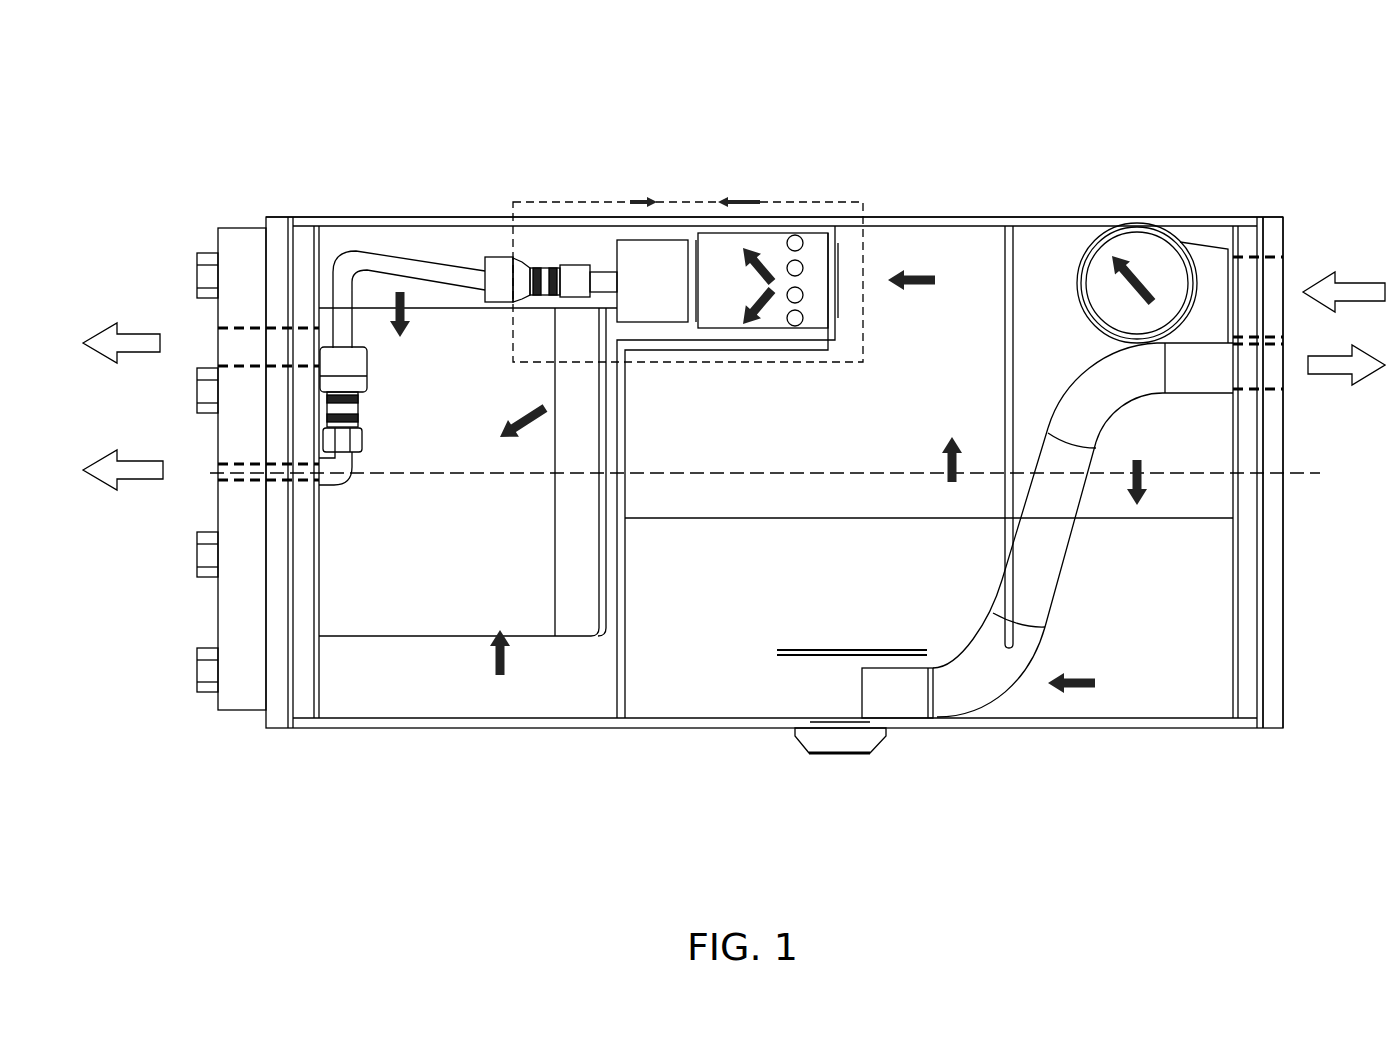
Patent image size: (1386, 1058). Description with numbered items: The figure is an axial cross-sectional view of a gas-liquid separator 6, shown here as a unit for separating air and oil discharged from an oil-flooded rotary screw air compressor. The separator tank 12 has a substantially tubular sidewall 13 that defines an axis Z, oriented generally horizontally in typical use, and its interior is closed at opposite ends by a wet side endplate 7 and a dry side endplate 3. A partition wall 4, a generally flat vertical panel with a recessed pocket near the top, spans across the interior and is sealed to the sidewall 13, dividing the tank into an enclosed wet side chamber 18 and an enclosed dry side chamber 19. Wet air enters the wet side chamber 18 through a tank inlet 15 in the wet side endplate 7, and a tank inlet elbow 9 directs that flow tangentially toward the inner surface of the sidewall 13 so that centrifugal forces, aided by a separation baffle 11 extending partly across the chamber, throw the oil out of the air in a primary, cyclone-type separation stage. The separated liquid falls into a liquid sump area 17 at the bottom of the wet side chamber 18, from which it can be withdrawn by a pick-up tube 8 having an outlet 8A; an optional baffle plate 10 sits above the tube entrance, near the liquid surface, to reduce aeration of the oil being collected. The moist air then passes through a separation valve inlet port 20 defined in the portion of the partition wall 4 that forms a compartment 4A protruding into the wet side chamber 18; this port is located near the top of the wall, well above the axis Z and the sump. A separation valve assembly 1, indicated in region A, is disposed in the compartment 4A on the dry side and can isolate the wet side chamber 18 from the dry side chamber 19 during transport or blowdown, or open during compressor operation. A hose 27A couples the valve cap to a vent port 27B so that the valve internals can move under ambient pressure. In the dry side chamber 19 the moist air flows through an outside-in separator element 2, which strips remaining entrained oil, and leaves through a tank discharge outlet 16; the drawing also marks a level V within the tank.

The separation valve assembly 1 is at (780, 411).
The separator element 2 is at (428, 635).
The dry side endplate 3 is at (280, 700).
The partition wall 4 is at (622, 690).
The compartment 4A is at (672, 330).
The gas-liquid separator 6 is at (318, 86).
The wet side endplate 7 is at (1268, 235).
The pick-up tube 8 is at (1075, 412).
The outlet 8A is at (1267, 378).
The tank inlet elbow 9 is at (1088, 248).
The baffle plate 10 is at (818, 650).
The separation baffle 11 is at (1003, 262).
The separator tank 12 is at (336, 214).
The sidewall 13 is at (1026, 728).
The tank inlet 15 is at (1282, 280).
The tank discharge outlet 16 is at (232, 345).
The liquid sump area 17 is at (699, 571).
The wet side chamber 18 is at (815, 441).
The dry side chamber 19 is at (577, 690).
The separation valve inlet port 20 is at (840, 305).
The hose 27A is at (375, 256).
The vent port 27B is at (222, 474).
The separation valve assembly region A is at (688, 261).
The line V is at (919, 507).
The axis Z is at (1295, 480).